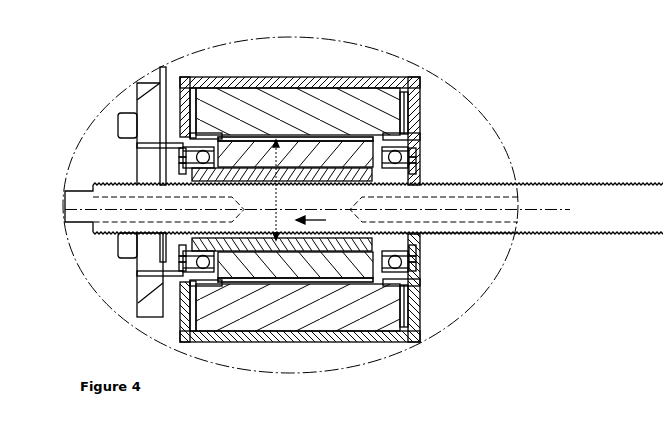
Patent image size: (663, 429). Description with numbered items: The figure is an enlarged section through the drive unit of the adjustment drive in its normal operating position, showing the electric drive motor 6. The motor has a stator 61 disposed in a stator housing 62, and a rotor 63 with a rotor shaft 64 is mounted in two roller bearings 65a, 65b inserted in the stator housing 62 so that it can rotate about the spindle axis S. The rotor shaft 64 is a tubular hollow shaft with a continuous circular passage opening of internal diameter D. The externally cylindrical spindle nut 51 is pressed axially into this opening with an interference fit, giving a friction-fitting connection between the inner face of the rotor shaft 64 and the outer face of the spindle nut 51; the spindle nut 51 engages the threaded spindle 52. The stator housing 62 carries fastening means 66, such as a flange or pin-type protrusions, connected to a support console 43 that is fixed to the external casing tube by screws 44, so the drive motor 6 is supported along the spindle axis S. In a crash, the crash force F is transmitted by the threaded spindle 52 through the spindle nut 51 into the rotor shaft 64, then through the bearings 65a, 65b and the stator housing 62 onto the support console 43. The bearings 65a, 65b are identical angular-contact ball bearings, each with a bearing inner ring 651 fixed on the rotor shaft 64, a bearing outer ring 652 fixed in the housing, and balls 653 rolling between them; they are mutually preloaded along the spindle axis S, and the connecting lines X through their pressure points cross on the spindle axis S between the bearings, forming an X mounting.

The electric drive motor 6 is at (376, 58).
The support console 43 is at (153, 282).
The screws 44 is at (127, 117).
The spindle nut 51 is at (445, 188).
The threaded spindle 52 is at (437, 233).
The stator 61 is at (334, 103).
The stator housing 62 is at (232, 80).
The rotor 63 is at (288, 148).
The rotor shaft 64 is at (309, 174).
The roller bearing 65a is at (183, 261).
The roller bearing 65b is at (437, 240).
The fastening means 66 is at (163, 67).
The bearing inner ring 651 is at (181, 168).
The bearing outer ring 652 is at (181, 150).
The balls 653 is at (181, 159).
The internal diameter D is at (270, 193).
The crash force F is at (314, 222).
The spindle axis S is at (563, 208).
The connecting lines X is at (93, 196).